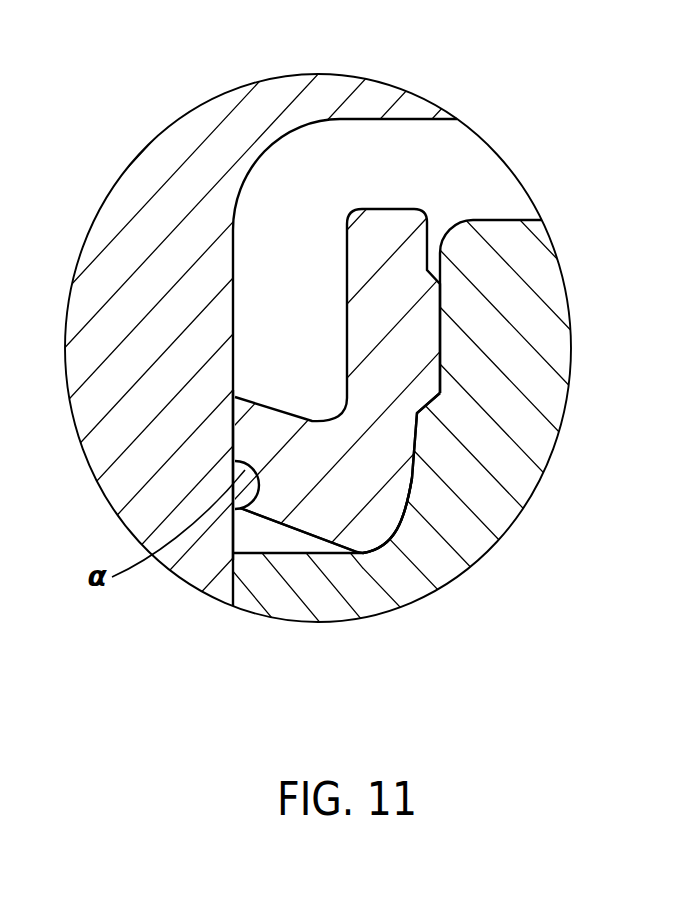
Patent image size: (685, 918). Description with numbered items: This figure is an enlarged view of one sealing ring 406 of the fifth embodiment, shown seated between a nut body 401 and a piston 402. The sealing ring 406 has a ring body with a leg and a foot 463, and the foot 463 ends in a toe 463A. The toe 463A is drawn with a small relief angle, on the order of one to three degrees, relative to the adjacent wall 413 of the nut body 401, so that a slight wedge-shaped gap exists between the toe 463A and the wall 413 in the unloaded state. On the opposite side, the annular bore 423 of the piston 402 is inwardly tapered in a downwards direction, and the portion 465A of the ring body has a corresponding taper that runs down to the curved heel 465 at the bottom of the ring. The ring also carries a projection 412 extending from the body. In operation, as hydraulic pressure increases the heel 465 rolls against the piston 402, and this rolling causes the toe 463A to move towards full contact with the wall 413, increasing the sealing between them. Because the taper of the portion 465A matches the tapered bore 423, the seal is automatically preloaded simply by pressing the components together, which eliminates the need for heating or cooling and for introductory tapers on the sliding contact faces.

The nut body 401 is at (136, 196).
The piston 402 is at (432, 602).
The sealing ring 406 is at (405, 187).
The protrusion 412 is at (363, 258).
The wall 413 is at (233, 433).
The annular bore 423 is at (428, 432).
The foot 463 is at (268, 446).
The toe 463A is at (243, 512).
The curved heel 465 is at (384, 537).
The portion of the ring body 465A is at (406, 497).